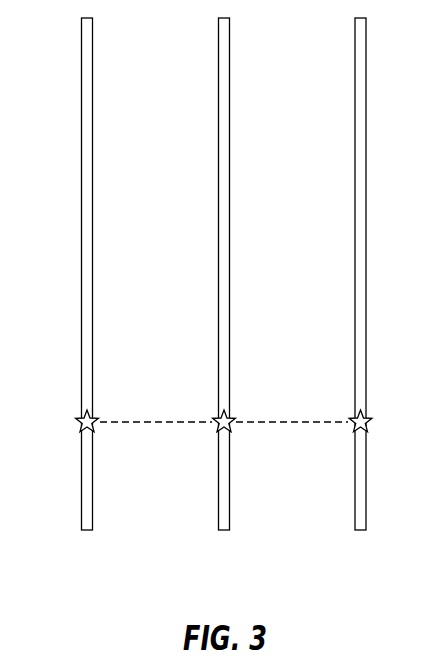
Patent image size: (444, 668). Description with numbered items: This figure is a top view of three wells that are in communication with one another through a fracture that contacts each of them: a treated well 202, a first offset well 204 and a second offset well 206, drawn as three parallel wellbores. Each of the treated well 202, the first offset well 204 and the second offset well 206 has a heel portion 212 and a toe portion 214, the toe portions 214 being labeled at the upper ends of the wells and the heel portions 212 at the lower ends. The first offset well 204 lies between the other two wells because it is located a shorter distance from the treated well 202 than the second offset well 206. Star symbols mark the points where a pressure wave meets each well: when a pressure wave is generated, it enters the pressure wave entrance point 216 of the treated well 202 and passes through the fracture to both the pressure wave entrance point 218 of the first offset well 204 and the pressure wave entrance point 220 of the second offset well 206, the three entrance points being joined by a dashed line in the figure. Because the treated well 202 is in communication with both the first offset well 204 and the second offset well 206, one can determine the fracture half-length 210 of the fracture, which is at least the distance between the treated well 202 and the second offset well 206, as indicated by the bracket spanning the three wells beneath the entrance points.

The treated well 202 is at (361, 531).
The first offset well 204 is at (224, 531).
The second offset well 206 is at (85, 532).
The fracture half-length 210 is at (95, 438).
The heel portion 212 is at (218, 498).
The toe portion 214 is at (218, 48).
The pressure wave entrance point 216 is at (367, 413).
The pressure wave entrance point 218 is at (230, 413).
The pressure wave entrance point 220 is at (80, 412).